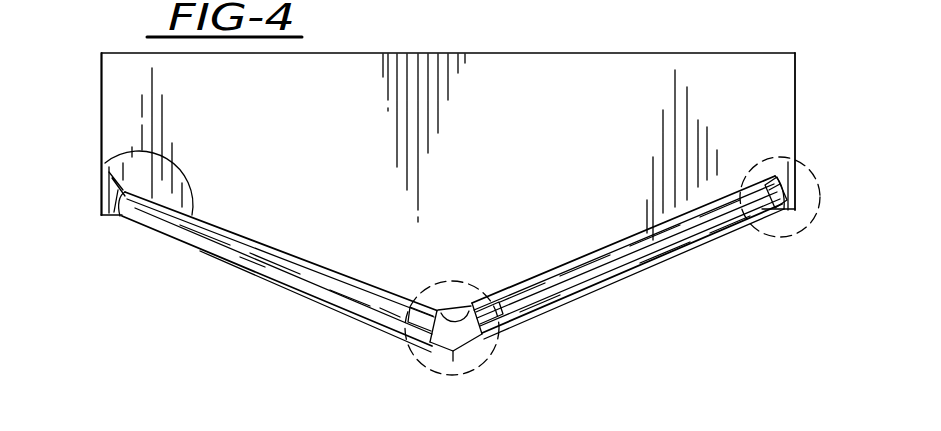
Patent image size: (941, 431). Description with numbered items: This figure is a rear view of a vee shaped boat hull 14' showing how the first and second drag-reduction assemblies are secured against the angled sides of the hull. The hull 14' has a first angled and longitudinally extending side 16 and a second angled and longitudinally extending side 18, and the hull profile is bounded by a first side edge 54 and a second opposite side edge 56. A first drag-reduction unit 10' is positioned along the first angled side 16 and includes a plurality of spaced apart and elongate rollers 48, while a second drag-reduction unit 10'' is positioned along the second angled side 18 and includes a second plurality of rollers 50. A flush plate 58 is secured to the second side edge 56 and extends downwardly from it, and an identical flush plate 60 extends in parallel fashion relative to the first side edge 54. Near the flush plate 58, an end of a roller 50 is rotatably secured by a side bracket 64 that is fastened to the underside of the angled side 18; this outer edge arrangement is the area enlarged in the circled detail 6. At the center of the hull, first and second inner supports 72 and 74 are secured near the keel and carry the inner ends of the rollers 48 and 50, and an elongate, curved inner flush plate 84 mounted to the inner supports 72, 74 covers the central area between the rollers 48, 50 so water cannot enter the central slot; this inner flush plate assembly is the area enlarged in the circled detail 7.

The boat hull 14' is at (511, 47).
The first side edge 54 is at (94, 90).
The second side edge 56 is at (811, 127).
The flush plate 60 is at (103, 200).
The first angled side 16 is at (105, 163).
The second angled side 18 is at (633, 229).
The rollers 48 is at (327, 288).
The first drag-reduction unit 10' is at (279, 287).
The rollers 50 is at (603, 280).
The second drag-reduction unit 10'' is at (637, 271).
The side bracket 64 is at (777, 173).
The flush plate 58 is at (798, 199).
The detail circle 6 is at (818, 222).
The first inner support 72 is at (437, 308).
The second inner support 74 is at (471, 306).
The inner flush plate 84 is at (445, 375).
The detail circle 7 is at (378, 365).